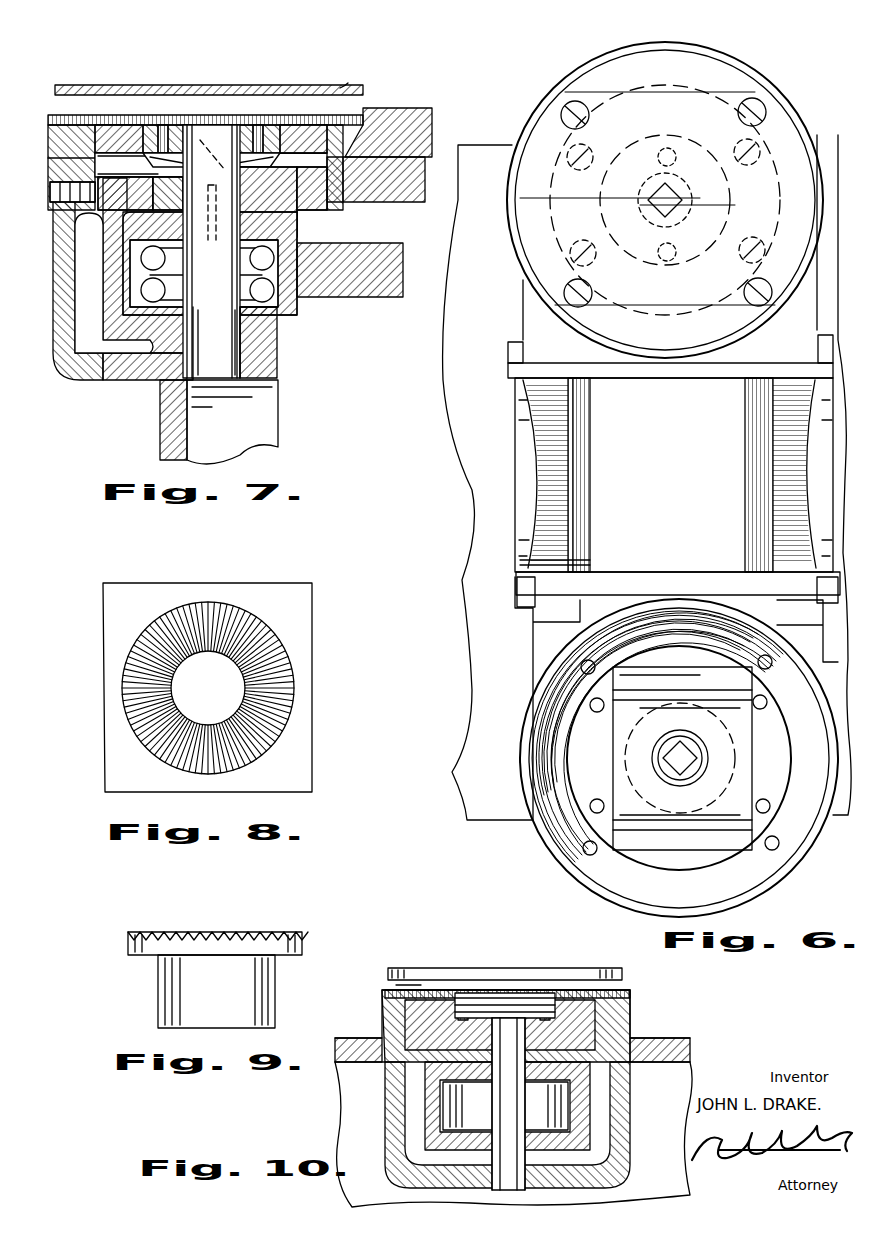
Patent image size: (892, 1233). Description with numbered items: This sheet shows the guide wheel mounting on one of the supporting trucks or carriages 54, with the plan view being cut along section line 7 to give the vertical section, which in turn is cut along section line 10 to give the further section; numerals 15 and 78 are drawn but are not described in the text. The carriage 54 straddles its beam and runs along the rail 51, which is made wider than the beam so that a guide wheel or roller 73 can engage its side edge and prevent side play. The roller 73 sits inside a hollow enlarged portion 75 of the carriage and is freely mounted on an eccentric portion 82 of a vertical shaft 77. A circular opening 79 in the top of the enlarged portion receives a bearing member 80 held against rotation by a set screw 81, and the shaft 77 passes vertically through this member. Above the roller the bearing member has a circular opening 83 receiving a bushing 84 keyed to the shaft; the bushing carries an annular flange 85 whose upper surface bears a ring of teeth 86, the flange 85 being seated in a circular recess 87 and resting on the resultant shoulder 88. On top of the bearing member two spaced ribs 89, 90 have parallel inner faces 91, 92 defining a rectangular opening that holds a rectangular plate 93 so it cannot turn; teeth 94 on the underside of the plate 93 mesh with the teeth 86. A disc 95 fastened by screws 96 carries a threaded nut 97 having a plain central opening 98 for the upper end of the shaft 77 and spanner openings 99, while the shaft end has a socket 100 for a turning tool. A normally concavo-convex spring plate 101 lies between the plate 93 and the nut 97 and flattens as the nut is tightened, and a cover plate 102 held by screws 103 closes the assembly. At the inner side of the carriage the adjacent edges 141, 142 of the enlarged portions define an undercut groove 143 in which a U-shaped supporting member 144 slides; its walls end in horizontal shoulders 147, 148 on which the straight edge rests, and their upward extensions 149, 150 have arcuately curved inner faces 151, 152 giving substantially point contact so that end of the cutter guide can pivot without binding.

In FIG. 6, the section line 7- 7 is at (674, 18).
In FIG. 7, the section line 10- 10 is at (210, 80).
In FIG. 6, the flange disc 15 is at (534, 120).
In FIG. 7, the rail 51 is at (338, 244).
In FIG. 7, the supporting truck or carriage 54 is at (163, 421).
In FIG. 10, the supporting truck or carriage 54 is at (665, 1037).
In FIG. 6, the supporting truck or carriage 54 is at (458, 528).
In FIG. 10, the guide wheel or roller 73 is at (474, 1093).
In FIG. 7, the hollow enlarged portion 75 is at (68, 363).
In FIG. 10, the hollow enlarged portion 75 is at (384, 1098).
In FIG. 7, the vertical shaft 77 is at (248, 355).
In FIG. 10, the vertical shaft 77 is at (527, 1177).
In FIG. 6, the vertical shaft 77 is at (648, 218).
In FIG. 7, the shaft collar 78 is at (273, 308).
In FIG. 7, the circular opening 79 is at (60, 151).
In FIG. 10, the circular opening 79 is at (596, 1005).
In FIG. 6, the circular opening 79 is at (663, 857).
In FIG. 7, the bearing member 80 is at (78, 232).
In FIG. 10, the bearing member 80 is at (385, 1036).
In FIG. 7, the set screw 81 is at (50, 182).
In FIG. 7, the eccentric portion 82 is at (216, 342).
In FIG. 6, the eccentric portion 82 is at (648, 745).
In FIG. 7, the circular opening 83 is at (278, 224).
In FIG. 7, the bushing 84 is at (164, 226).
In FIG. 9, the bushing 84 is at (190, 1000).
In FIG. 10, the bushing 84 is at (534, 1079).
In FIG. 7, the annular flange 85 is at (300, 196).
In FIG. 9, the annular flange 85 is at (301, 946).
In FIG. 9, the teeth 86 is at (244, 930).
In FIG. 7, the circular recess 87 is at (114, 283).
In FIG. 7, the shoulder 88 is at (260, 202).
In FIG. 6, the rib 89 is at (582, 760).
In FIG. 6, the rib 90 is at (767, 755).
In FIG. 6, the inner face 91 is at (627, 766).
In FIG. 6, the inner face 92 is at (733, 762).
In FIG. 7, the rectangular plate 93 is at (157, 165).
In FIG. 8, the rectangular plate 93 is at (292, 587).
In FIG. 10, the rectangular plate 93 is at (505, 1005).
In FIG. 8, the teeth 94 is at (179, 606).
In FIG. 7, the disc 95 is at (310, 94).
In FIG. 10, the disc 95 is at (414, 984).
In FIG. 6, the disc 95 is at (705, 95).
In FIG. 10, the screws 96 is at (576, 986).
In FIG. 6, the screws 96 is at (742, 250).
In FIG. 7, the nut 97 is at (171, 129).
In FIG. 10, the nut 97 is at (465, 988).
In FIG. 6, the nut 97 is at (673, 136).
In FIG. 7, the plain central opening 98 is at (252, 129).
In FIG. 7, the openings 99 is at (308, 129).
In FIG. 6, the openings 99 is at (674, 160).
In FIG. 7, the socket 100 is at (216, 137).
In FIG. 6, the socket 100 is at (682, 217).
In FIG. 7, the spring plate 101 is at (160, 108).
In FIG. 10, the spring plate 101 is at (546, 988).
In FIG. 6, the spring plate 101 is at (633, 700).
In FIG. 7, the cover plate 102 is at (164, 82).
In FIG. 10, the cover plate 102 is at (500, 967).
In FIG. 6, the cover plate 102 is at (535, 227).
In FIG. 6, the screws 103 is at (570, 120).
In FIG. 6, the inner adjacent edge 141 is at (634, 378).
In FIG. 6, the inner adjacent edge 142 is at (672, 548).
In FIG. 7, the undercut groove or channel 143 is at (392, 130).
In FIG. 6, the supporting member 144 is at (570, 553).
In FIG. 6, the horizontal shoulder 147 is at (579, 498).
In FIG. 6, the horizontal shoulder 148 is at (780, 415).
In FIG. 6, the projecting portion 149 is at (500, 464).
In FIG. 6, the projecting portion 150 is at (800, 475).
In FIG. 6, the arcuately curved inner face 151 is at (562, 416).
In FIG. 6, the arcuately curved inner face 152 is at (800, 446).